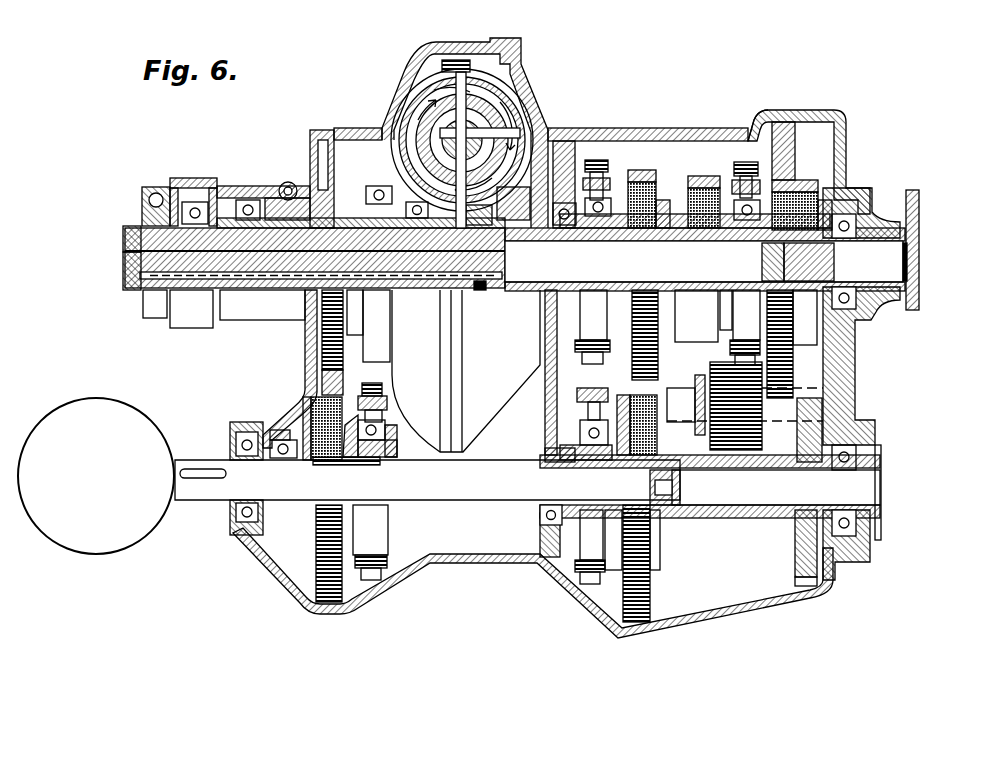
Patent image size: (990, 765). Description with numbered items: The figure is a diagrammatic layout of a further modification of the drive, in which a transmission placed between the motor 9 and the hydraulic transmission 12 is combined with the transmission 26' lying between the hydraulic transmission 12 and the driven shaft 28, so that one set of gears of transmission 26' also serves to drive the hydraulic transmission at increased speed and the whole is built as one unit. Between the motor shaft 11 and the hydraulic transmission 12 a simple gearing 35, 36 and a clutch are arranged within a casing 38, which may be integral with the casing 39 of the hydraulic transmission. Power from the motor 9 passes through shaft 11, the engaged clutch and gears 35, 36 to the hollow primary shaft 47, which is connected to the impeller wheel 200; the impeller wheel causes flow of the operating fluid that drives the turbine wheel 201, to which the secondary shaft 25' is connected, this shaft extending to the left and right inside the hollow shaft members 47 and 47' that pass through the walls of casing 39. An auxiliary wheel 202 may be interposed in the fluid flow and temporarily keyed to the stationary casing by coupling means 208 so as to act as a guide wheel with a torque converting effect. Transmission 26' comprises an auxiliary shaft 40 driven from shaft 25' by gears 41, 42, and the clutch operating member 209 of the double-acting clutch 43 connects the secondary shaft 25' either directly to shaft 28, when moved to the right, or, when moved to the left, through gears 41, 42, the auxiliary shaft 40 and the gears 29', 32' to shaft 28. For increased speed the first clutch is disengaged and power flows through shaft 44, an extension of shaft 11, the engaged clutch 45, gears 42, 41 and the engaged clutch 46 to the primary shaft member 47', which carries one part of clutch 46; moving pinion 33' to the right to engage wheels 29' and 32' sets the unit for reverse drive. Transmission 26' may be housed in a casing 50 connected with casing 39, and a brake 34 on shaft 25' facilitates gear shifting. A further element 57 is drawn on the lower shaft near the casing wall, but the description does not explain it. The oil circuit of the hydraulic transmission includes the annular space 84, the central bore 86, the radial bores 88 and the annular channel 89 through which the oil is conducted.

The motor 9 is at (108, 554).
The motor shaft 11 is at (214, 460).
The hydraulic transmission 12 is at (466, 371).
The secondary shaft 25' is at (496, 271).
The transmission 26' is at (818, 161).
The driven shaft 28 is at (922, 258).
The gear 29' is at (785, 548).
The gear 32' is at (743, 123).
The pinion 33' is at (744, 402).
The brake 34 is at (185, 187).
The gear 35 is at (312, 598).
The gear 36 is at (320, 133).
The casing 38 is at (268, 559).
The casing 39 is at (418, 66).
The auxiliary shaft 40 is at (726, 500).
The gear 41 is at (648, 176).
The gear 42 is at (652, 607).
The double-acting clutch 43 is at (693, 178).
The shaft 44 is at (440, 490).
The clutch 45 is at (623, 402).
The clutch 46 is at (630, 180).
The primary shaft 47 is at (274, 182).
The primary shaft member 47' is at (567, 236).
The casing 50 is at (856, 376).
The clutch 57 is at (305, 412).
The annular space 84 is at (283, 190).
The central bore 86 is at (123, 268).
The radial bores 88 is at (125, 241).
The annular channel 89 is at (148, 204).
The impeller wheel 200 is at (400, 113).
The turbine wheel 201 is at (482, 103).
The auxiliary wheel 202 is at (530, 132).
The coupling means 208 is at (480, 285).
The clutch operating member 209 is at (742, 232).